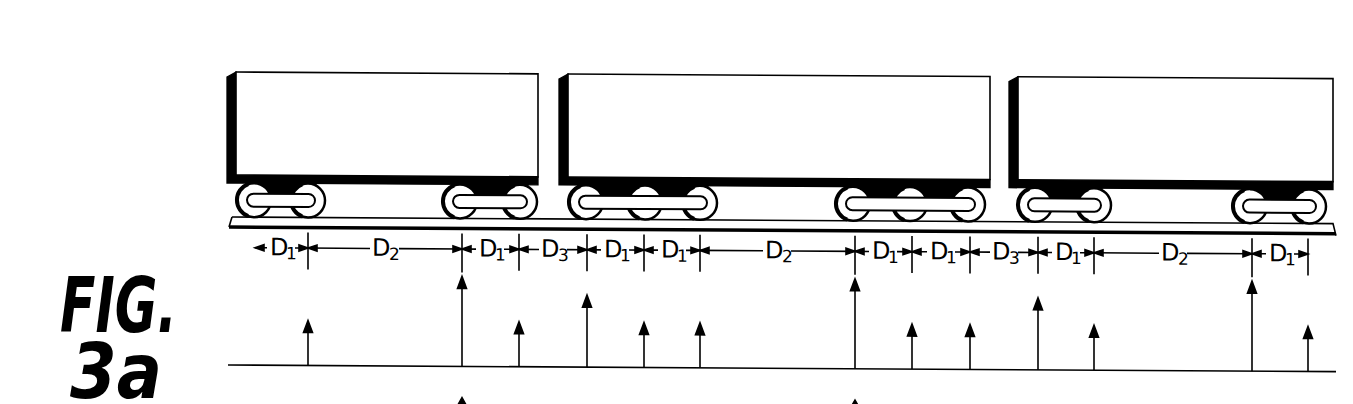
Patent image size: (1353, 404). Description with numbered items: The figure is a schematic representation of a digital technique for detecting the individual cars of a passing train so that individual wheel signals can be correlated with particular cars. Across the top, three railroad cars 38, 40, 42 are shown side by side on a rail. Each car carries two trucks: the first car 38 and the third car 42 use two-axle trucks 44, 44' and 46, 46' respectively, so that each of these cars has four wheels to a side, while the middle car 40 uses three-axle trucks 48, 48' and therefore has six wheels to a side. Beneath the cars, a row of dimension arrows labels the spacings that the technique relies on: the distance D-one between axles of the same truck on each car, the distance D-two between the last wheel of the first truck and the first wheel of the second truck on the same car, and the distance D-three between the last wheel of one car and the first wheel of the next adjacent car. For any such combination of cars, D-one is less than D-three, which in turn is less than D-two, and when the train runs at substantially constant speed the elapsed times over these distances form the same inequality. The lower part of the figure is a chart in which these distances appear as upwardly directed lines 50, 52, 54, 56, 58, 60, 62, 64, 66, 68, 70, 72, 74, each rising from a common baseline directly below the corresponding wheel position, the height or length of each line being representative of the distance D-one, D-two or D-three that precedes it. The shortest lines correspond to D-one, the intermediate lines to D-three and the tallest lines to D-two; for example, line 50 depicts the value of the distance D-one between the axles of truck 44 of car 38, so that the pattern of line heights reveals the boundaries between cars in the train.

The railroad car 38 is at (407, 69).
The railroad car 40 is at (710, 70).
The railroad car 42 is at (1125, 70).
The two-axle truck 44 is at (281, 172).
The two-axle truck 44' is at (486, 172).
The three-axle truck 48 is at (643, 173).
The three-axle truck 48' is at (910, 175).
The two-axle truck 46 is at (1064, 178).
The two-axle truck 46' is at (1279, 178).
The upwardly directed line 50 is at (308, 346).
The upwardly directed line 52 is at (462, 314).
The upwardly directed line 54 is at (519, 338).
The upwardly directed line 56 is at (587, 311).
The upwardly directed line 58 is at (644, 338).
The upwardly directed line 60 is at (700, 339).
The upwardly directed line 62 is at (855, 311).
The upwardly directed line 64 is at (912, 336).
The upwardly directed line 66 is at (968, 336).
The upwardly directed line 68 is at (1038, 335).
The upwardly directed line 70 is at (1094, 339).
The upwardly directed line 72 is at (1252, 306).
The upwardly directed line 74 is at (1308, 344).